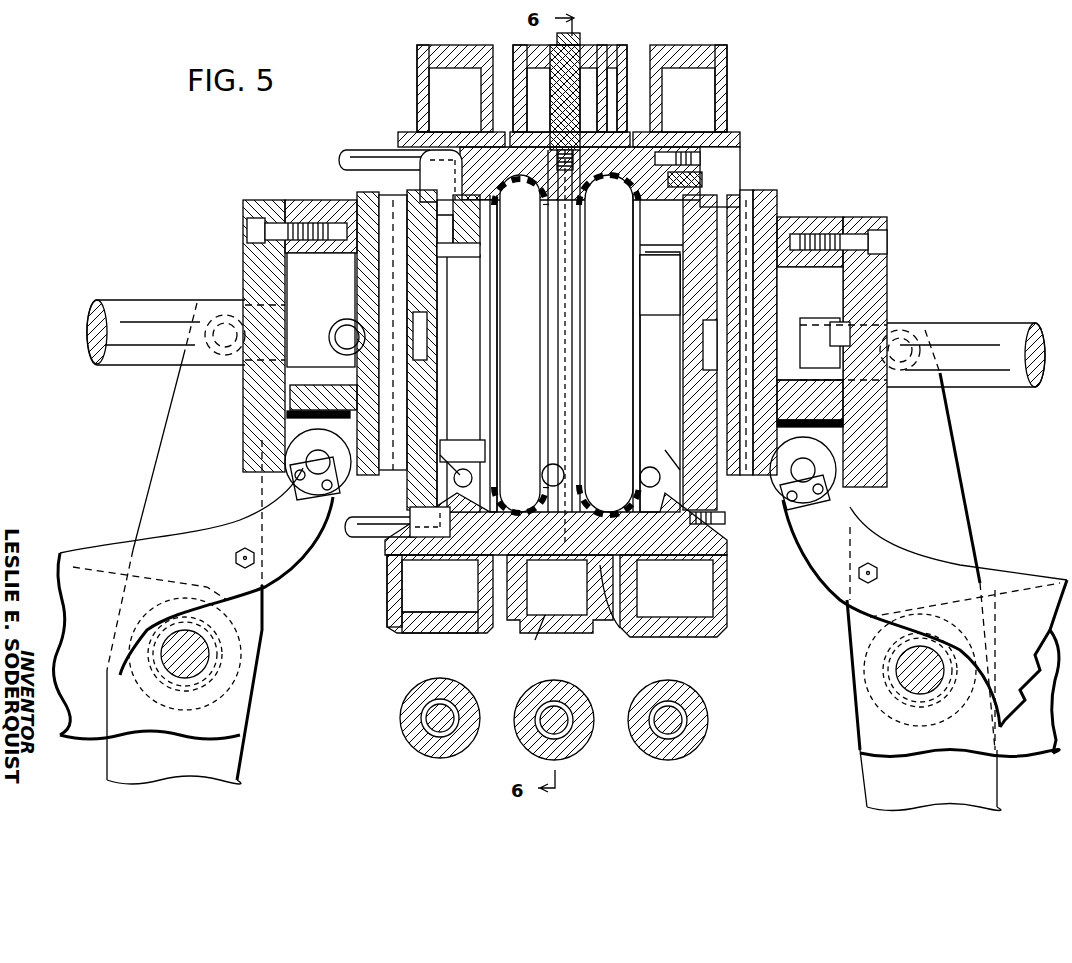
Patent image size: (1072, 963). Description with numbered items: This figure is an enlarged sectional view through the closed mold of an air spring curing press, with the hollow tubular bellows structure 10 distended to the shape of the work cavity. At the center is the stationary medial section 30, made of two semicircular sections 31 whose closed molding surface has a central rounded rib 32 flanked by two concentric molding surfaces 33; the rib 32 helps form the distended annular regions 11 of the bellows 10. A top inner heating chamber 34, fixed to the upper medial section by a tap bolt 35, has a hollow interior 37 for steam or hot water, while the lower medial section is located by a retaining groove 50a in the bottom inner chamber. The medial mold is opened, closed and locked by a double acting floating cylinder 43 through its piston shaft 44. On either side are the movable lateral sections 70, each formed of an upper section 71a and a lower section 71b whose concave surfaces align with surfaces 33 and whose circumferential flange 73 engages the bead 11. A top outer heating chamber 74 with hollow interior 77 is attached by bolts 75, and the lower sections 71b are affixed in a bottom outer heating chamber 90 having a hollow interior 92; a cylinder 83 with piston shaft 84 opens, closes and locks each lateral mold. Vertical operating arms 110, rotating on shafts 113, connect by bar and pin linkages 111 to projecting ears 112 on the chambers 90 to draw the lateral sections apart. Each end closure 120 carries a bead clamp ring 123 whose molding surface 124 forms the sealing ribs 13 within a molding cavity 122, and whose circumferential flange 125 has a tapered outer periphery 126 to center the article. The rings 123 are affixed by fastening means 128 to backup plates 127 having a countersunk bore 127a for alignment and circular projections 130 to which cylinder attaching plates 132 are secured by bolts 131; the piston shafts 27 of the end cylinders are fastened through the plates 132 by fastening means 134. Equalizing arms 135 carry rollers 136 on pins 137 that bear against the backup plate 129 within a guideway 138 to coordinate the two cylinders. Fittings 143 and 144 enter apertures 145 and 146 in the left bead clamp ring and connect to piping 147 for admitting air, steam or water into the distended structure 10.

The air spring bellows structure 10 is at (545, 232).
The distended annular regions 11 is at (470, 462).
The sealing ribs 13 is at (450, 455).
The piston shaft 27 is at (165, 318).
The medial section 30 is at (601, 50).
The semi-circular sections 31 is at (608, 185).
The central rounded rib 32 is at (560, 448).
The concentric molding surfaces 33 is at (538, 185).
The top inner heating chamber 34 is at (624, 52).
The tap bolt 35 is at (585, 42).
The hollow interior 37 is at (550, 637).
The cylinder 43 is at (570, 692).
The piston shaft 44 is at (560, 732).
The retaining groove 50a is at (620, 628).
The lateral sections 70 is at (452, 60).
The upper section 71a is at (450, 148).
The lower section 71b is at (470, 540).
The circumferential flange 73 is at (472, 478).
The top outer heating chamber 74 is at (422, 58).
The bolts 75 is at (703, 160).
The hollow interior 77 is at (445, 92).
The cylinder 83 is at (455, 695).
The piston shaft 84 is at (448, 728).
The bottom outer heating chamber 90 is at (392, 592).
The hollow interior 92 is at (415, 604).
The vertical operating arms 110 is at (165, 470).
The bar and pin linkages 111 is at (305, 325).
The projecting ears 112 is at (350, 380).
The shafts 113 is at (200, 658).
The end closure 120 is at (358, 270).
The molding cavity 122 is at (456, 222).
The bead clamp ring 123 is at (432, 300).
The molding surface 124 is at (623, 480).
The circumferential flange 125 is at (650, 254).
The outer periphery 126 is at (645, 237).
The backup plates 127 is at (428, 385).
The cylindrical countersunk bore 127a is at (430, 342).
The fastening means 128 is at (703, 180).
The backup plate 129 is at (760, 216).
The circular projections 130 is at (340, 215).
The bolts 131 is at (248, 230).
The cylinder attaching plates 132 is at (260, 258).
The fastening means 134 is at (855, 325).
The equalizing arms 135 is at (276, 568).
The roller 136 is at (295, 470).
The pin 137 is at (310, 470).
The guideway 138 is at (300, 422).
The fitting 143 is at (420, 182).
The fitting 144 is at (388, 533).
The aperture 145 is at (492, 263).
The aperture 146 is at (470, 448).
The piping 147 is at (342, 156).